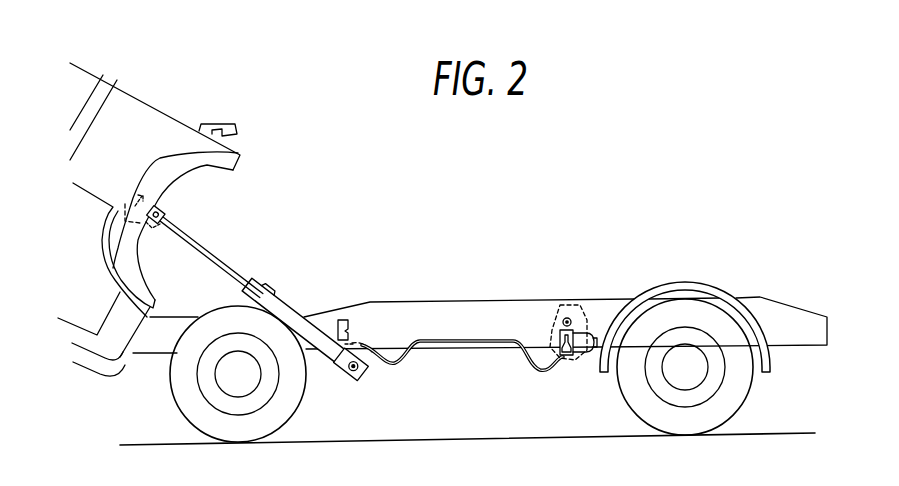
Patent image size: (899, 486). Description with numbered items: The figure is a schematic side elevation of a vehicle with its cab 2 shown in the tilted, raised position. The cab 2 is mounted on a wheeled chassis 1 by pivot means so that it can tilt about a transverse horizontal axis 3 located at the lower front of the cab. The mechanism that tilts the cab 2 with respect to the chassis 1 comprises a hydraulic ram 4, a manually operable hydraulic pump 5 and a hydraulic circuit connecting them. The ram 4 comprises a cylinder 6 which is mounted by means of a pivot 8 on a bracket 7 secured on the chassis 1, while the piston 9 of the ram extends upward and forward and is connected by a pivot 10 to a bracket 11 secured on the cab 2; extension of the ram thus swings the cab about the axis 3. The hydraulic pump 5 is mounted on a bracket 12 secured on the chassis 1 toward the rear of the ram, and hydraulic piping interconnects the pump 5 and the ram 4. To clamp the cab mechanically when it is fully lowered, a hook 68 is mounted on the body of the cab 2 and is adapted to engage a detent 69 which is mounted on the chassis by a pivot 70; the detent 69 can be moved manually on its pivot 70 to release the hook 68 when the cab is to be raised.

The wheeled chassis 1 is at (783, 335).
The cab 2 is at (78, 75).
The transverse horizontal axis 3 is at (122, 333).
The hydraulic ram 4 is at (291, 294).
The manually operable hydraulic pump 5 is at (597, 324).
The cylinder 6 is at (330, 350).
The bracket 7 is at (393, 361).
The pivot 8 is at (358, 378).
The piston 9 is at (213, 258).
The pivot 10 is at (160, 208).
The bracket 11 is at (136, 182).
The bracket 12 is at (563, 311).
The hook 68 is at (215, 117).
The detent 69 is at (350, 317).
The pivot 70 is at (363, 340).